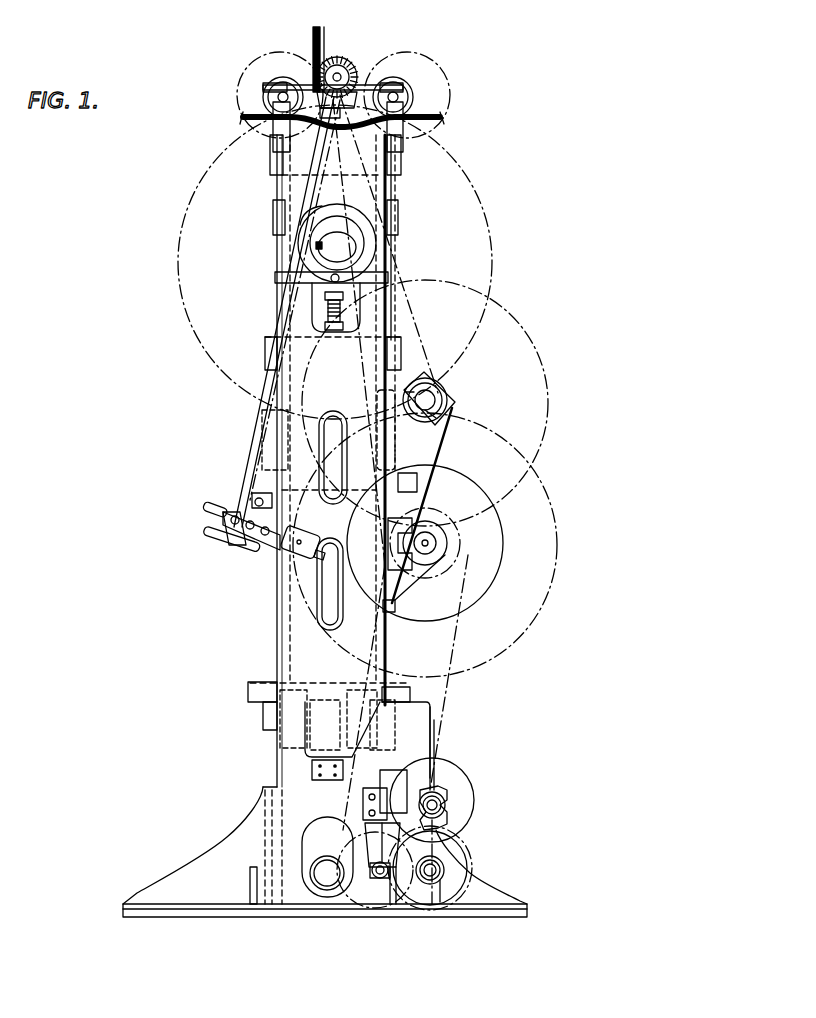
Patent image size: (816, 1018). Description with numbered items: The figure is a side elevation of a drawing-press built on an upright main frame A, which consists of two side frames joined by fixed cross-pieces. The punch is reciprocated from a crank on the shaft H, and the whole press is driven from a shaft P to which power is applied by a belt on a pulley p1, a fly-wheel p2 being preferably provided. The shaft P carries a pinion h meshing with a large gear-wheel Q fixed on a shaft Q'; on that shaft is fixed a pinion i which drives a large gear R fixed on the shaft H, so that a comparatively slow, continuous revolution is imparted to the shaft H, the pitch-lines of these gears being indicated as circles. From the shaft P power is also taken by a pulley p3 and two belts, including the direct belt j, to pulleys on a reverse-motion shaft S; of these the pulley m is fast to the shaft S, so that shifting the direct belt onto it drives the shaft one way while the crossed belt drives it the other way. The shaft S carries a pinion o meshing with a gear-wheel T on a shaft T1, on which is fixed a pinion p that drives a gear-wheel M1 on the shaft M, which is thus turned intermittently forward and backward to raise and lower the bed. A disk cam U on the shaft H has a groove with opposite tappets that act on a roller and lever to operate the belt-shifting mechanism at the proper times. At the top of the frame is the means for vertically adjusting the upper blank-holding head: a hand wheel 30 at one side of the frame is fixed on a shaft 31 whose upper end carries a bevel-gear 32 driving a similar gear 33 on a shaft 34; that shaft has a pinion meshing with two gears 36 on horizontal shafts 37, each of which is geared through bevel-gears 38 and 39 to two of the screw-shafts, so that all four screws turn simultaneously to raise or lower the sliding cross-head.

The wheel 30 is at (205, 536).
The shaft 31 is at (258, 444).
The bevel-gear 32 is at (325, 92).
The bevel-gear 33 is at (346, 60).
The shaft 34 is at (343, 58).
The gears 36 is at (343, 84).
The horizontal shafts 37 is at (266, 99).
The bevel-gear 38 is at (279, 86).
The bevel-gear 39 is at (242, 118).
The main frame A is at (325, 506).
The disk cam U is at (364, 253).
The shaft H is at (337, 247).
The gear R is at (492, 262).
The pulley p1 is at (478, 618).
The pinion p is at (340, 322).
The pinion i is at (428, 384).
The shaft Q' is at (443, 400).
The gear-wheel Q is at (433, 403).
The shaft P is at (452, 545).
The pinion h is at (456, 568).
The pulley p3 is at (410, 584).
The fly-wheel p2 is at (498, 648).
The direct belt j is at (440, 735).
The gear-wheel M1 is at (472, 778).
The shaft M is at (447, 806).
The gear-wheel T is at (467, 868).
The shaft T1 is at (440, 902).
The reverse-motion shaft S is at (380, 880).
The fast pulley m is at (372, 880).
The pinion o is at (375, 870).